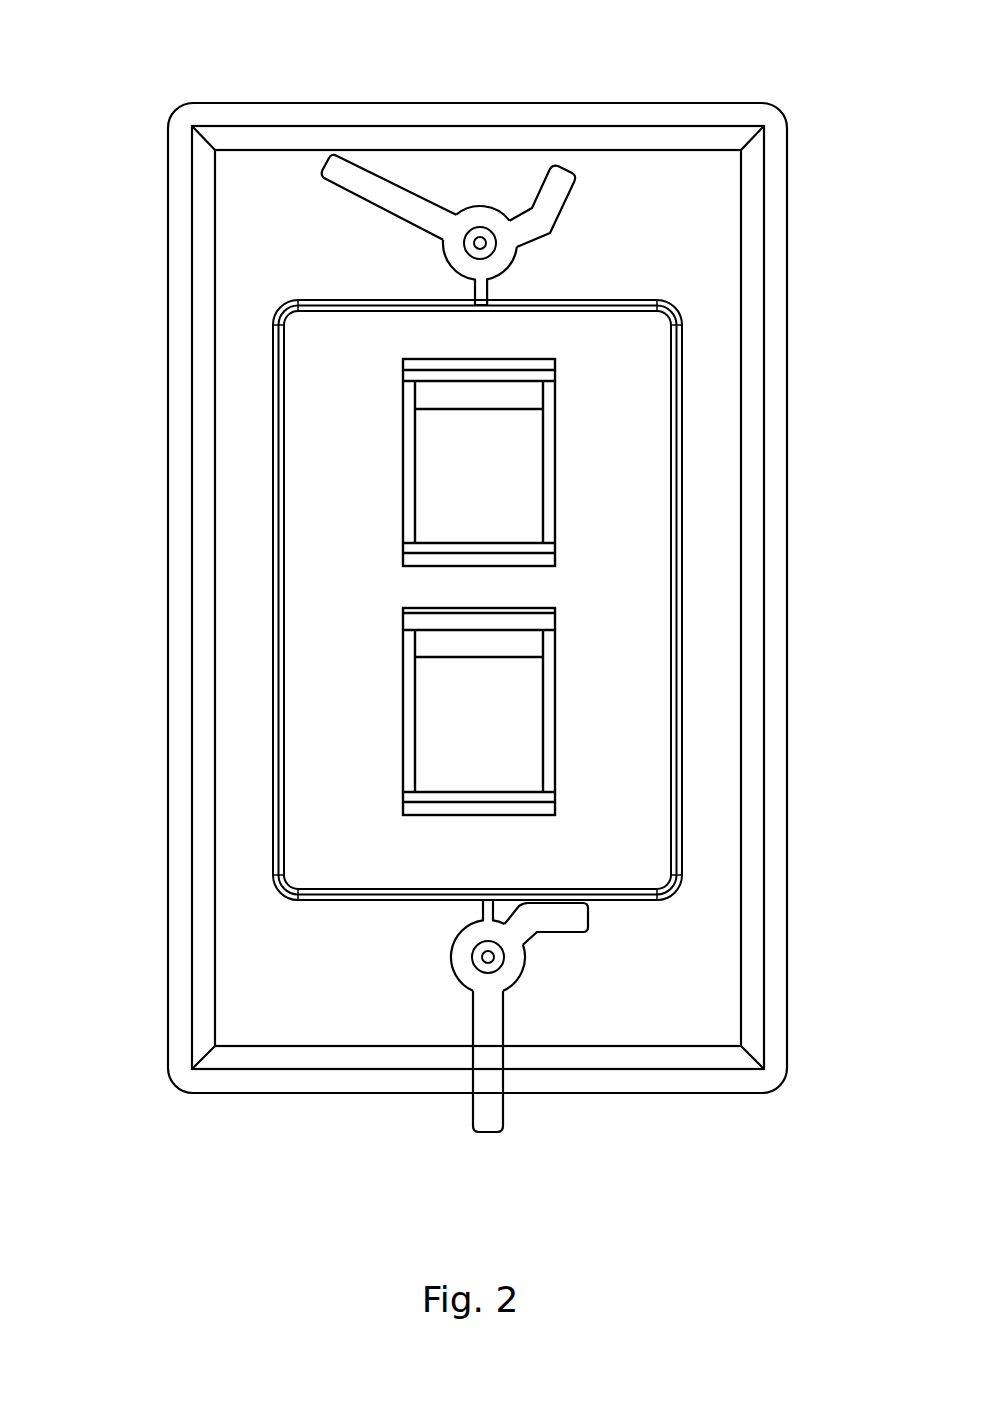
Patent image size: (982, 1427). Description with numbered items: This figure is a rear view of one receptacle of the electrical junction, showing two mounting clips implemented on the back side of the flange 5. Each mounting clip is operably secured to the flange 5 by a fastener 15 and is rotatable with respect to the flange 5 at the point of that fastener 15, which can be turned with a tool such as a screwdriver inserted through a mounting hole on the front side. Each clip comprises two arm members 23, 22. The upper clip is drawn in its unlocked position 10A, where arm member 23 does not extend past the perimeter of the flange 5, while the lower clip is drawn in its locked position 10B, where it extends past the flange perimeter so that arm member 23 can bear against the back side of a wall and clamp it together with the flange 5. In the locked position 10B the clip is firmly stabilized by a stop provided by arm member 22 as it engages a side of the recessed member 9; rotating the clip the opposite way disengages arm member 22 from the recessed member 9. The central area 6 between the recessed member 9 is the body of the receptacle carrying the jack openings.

The flange 5 is at (168, 515).
The recessed member 9 is at (273, 647).
The insert with jack openings 6 is at (330, 818).
The unlocked position 10A is at (445, 193).
The locked position 10B is at (520, 1057).
The fastener 15 is at (481, 240).
The arm member 22 is at (572, 208).
The arm member 23 is at (388, 180).